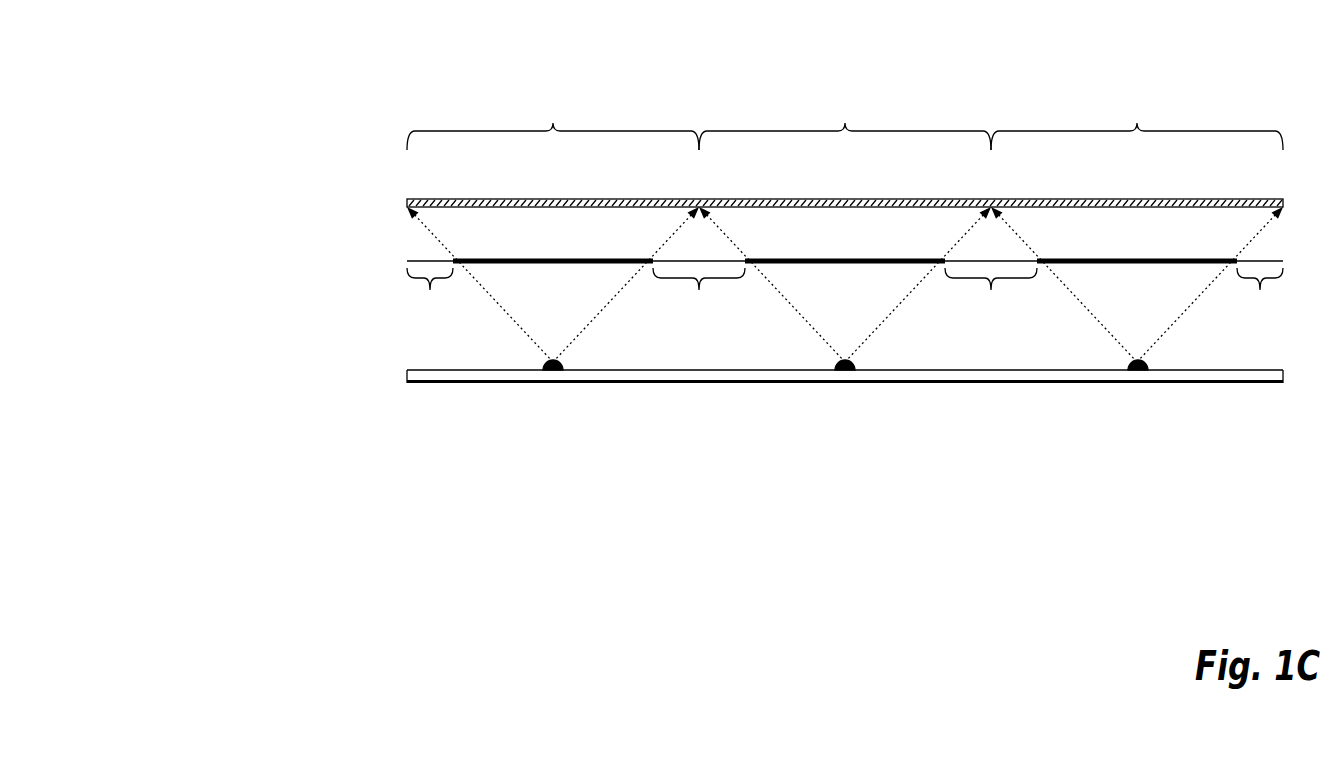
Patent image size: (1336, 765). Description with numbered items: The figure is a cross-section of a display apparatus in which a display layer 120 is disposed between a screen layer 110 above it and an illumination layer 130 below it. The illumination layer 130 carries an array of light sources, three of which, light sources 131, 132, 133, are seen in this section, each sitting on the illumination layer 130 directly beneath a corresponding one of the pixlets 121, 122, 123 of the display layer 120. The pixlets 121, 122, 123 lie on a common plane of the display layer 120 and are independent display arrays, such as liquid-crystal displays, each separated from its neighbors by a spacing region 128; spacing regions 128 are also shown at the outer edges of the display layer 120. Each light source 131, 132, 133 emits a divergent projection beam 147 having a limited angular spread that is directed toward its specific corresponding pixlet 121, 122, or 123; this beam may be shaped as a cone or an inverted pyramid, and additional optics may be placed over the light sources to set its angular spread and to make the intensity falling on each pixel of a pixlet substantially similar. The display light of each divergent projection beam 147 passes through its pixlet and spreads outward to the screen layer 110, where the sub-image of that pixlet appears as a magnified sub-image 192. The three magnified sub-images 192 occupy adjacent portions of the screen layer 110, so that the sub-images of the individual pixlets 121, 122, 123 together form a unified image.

The screen layer 110 is at (353, 203).
The display layer 120 is at (357, 260).
The illumination layer 130 is at (357, 377).
The pixlet 121 is at (562, 258).
The pixlet 122 is at (854, 258).
The pixlet 123 is at (1146, 258).
The spacing region 128 is at (845, 293).
The light source 131 is at (554, 372).
The light source 132 is at (846, 372).
The light source 133 is at (1139, 372).
The divergent projection beam 147 is at (598, 302).
The magnified sub-image 192 is at (845, 105).